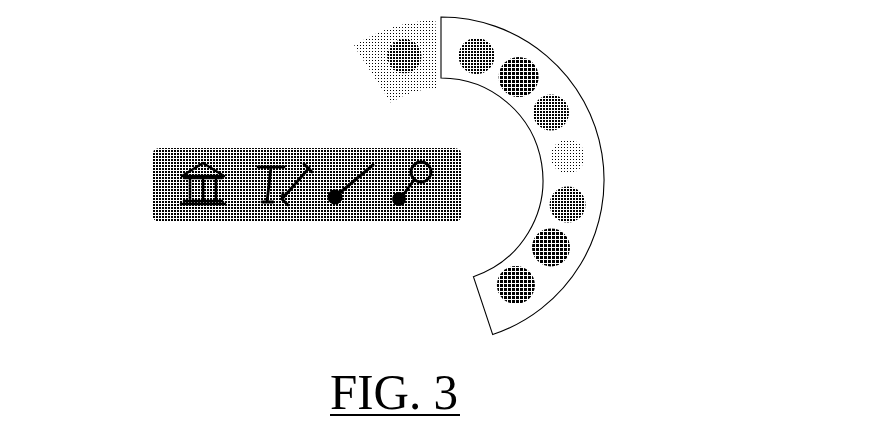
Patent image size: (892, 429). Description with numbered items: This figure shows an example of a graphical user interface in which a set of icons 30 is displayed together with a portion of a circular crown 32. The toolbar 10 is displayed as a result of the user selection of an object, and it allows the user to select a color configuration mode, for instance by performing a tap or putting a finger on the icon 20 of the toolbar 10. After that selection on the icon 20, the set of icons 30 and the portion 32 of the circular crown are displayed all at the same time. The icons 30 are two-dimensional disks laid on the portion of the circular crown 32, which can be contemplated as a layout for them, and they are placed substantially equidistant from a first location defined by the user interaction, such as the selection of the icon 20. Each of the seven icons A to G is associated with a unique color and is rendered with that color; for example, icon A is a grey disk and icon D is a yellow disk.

The toolbar 10 is at (244, 222).
The icon 20 is at (392, 199).
The set of icons 30 is at (540, 176).
The portion of a circular crown 32 is at (598, 226).